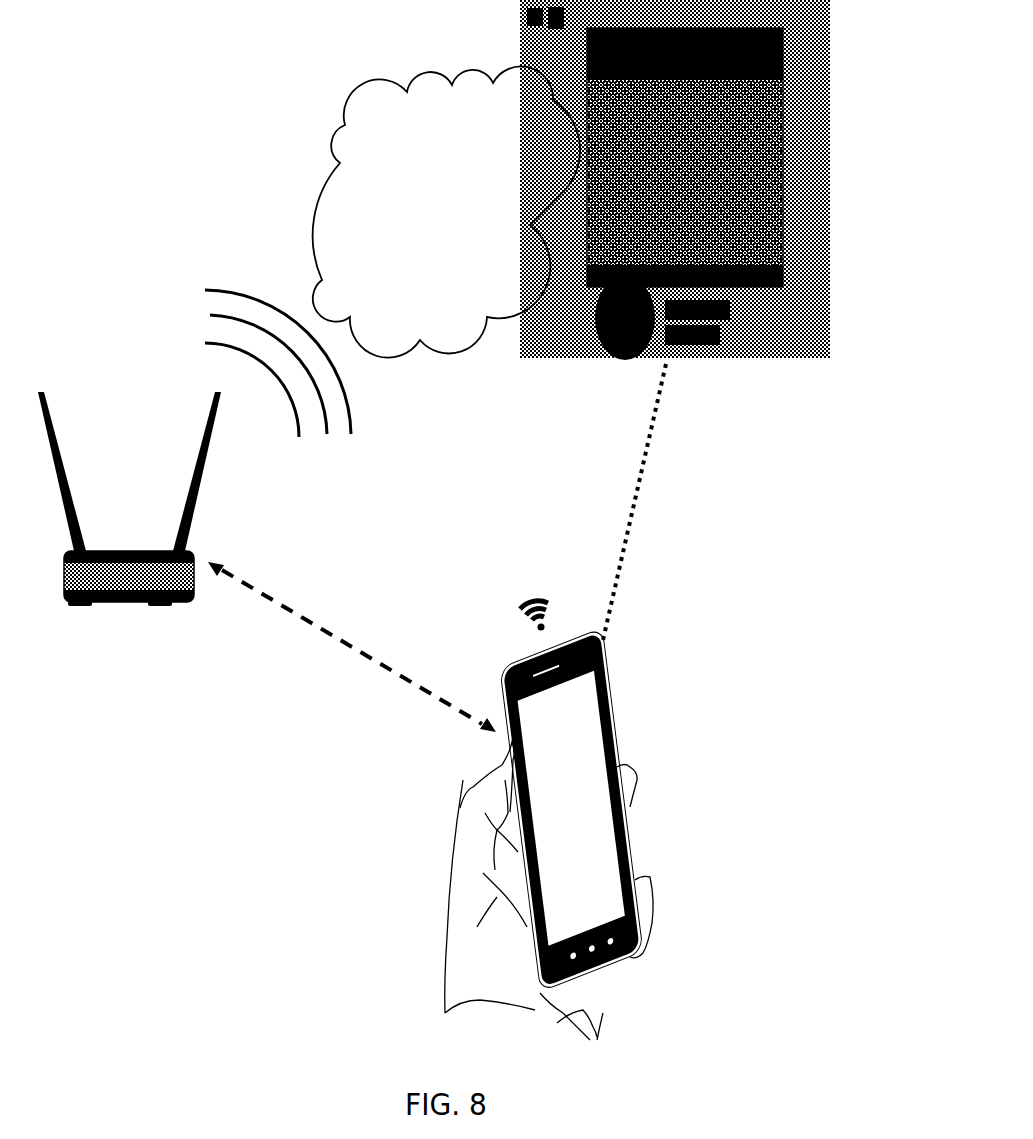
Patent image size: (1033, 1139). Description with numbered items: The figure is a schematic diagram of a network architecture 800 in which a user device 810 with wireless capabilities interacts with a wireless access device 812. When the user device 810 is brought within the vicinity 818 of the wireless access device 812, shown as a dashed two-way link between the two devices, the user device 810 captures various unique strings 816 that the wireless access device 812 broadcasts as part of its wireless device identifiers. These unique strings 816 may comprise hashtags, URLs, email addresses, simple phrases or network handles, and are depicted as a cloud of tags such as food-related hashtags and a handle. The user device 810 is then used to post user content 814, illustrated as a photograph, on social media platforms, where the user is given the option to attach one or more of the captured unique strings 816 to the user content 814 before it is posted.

The network architecture 800 is at (156, 121).
The user device 810 is at (610, 743).
The wireless access device 812 is at (102, 603).
The user content 814 is at (747, 360).
The unique strings 816 is at (347, 120).
The vicinity 818 is at (320, 638).